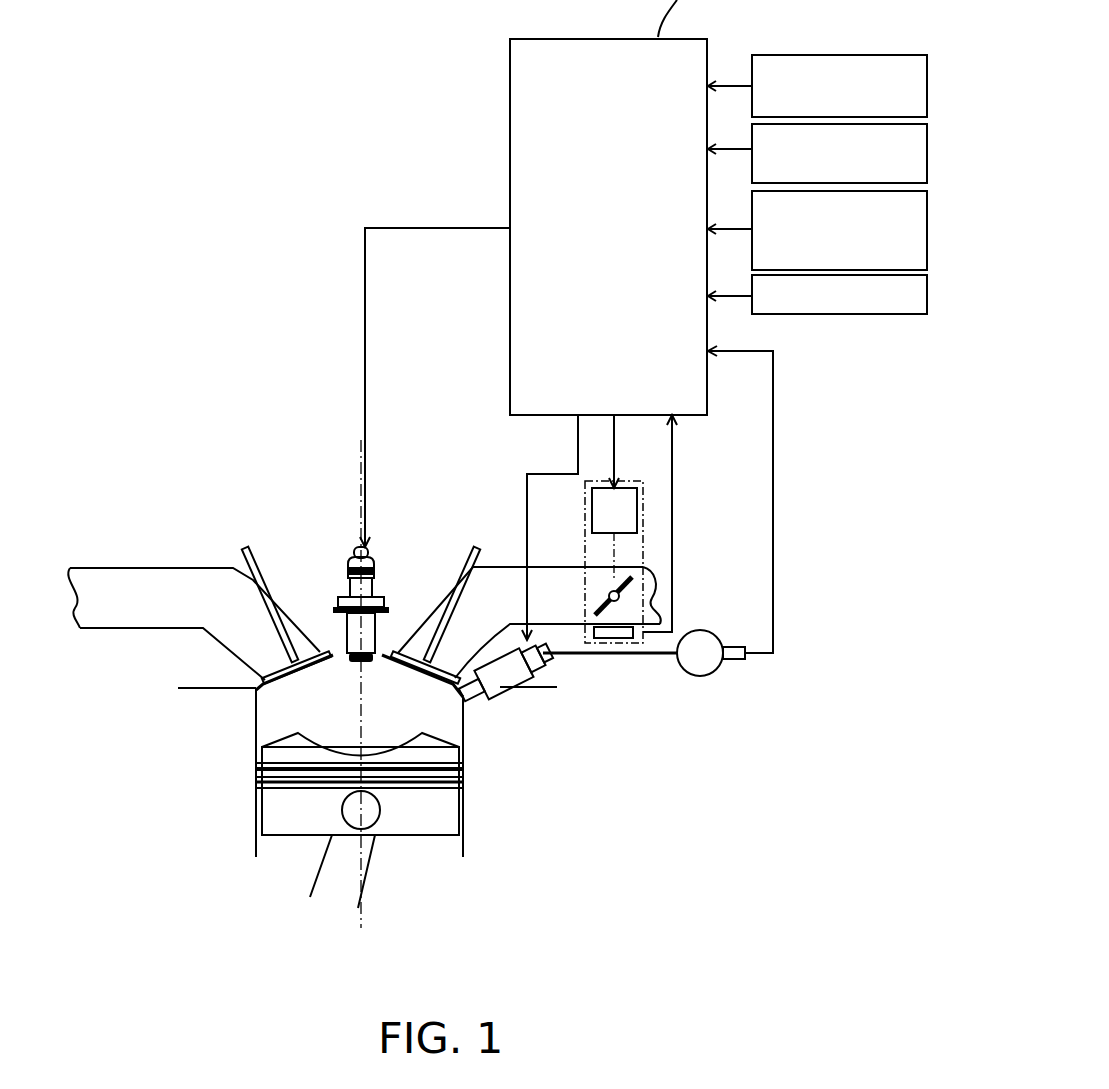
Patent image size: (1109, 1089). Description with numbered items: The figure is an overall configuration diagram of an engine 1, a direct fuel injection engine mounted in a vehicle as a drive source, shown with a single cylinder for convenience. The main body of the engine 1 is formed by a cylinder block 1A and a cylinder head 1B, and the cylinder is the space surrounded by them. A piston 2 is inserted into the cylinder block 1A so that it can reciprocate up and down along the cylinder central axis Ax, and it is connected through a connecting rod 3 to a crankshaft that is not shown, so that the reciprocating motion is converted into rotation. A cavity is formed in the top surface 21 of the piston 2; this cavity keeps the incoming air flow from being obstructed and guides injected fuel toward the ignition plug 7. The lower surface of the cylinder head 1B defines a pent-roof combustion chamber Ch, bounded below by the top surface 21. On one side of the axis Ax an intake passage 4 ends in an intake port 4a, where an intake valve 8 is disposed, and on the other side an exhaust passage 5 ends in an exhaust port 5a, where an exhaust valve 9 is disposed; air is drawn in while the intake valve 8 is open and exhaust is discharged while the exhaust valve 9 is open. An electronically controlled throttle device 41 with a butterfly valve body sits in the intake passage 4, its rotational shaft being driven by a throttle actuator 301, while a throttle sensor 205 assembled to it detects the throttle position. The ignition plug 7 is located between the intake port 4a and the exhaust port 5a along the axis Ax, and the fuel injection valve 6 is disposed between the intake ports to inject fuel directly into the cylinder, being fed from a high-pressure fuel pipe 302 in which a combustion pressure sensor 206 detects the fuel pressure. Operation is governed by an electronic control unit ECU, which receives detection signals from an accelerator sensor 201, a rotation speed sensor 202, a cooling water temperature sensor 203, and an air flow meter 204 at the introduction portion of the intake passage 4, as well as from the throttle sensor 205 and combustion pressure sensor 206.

The engine 1 is at (188, 468).
The cylinder block 1A is at (333, 772).
The cylinder head 1B is at (367, 676).
The piston 2 is at (325, 781).
The top surface 21 is at (270, 742).
The connecting rod 3 is at (368, 867).
The intake passage 4 is at (538, 575).
The intake port 4a is at (412, 642).
The exhaust passage 5 is at (152, 573).
The exhaust port 5a is at (303, 645).
The fuel injection valve 6 is at (493, 695).
The ignition plug 7 is at (348, 572).
The intake valve 8 is at (457, 556).
The exhaust valve 9 is at (245, 551).
The electronically controlled throttle device 41 is at (655, 568).
The accelerator sensor 201 is at (931, 88).
The rotation speed sensor 202 is at (931, 153).
The cooling water temperature sensor 203 is at (931, 230).
The air flow meter 204 is at (931, 295).
The throttle sensor 205 is at (617, 655).
The combustion pressure sensor 206 is at (662, 659).
The throttle actuator 301 is at (632, 483).
The fuel accumulator 302 is at (718, 673).
The cylinder central axis Ax is at (360, 451).
The combustion chamber Ch is at (330, 708).
The electronic control unit ECU is at (608, 227).